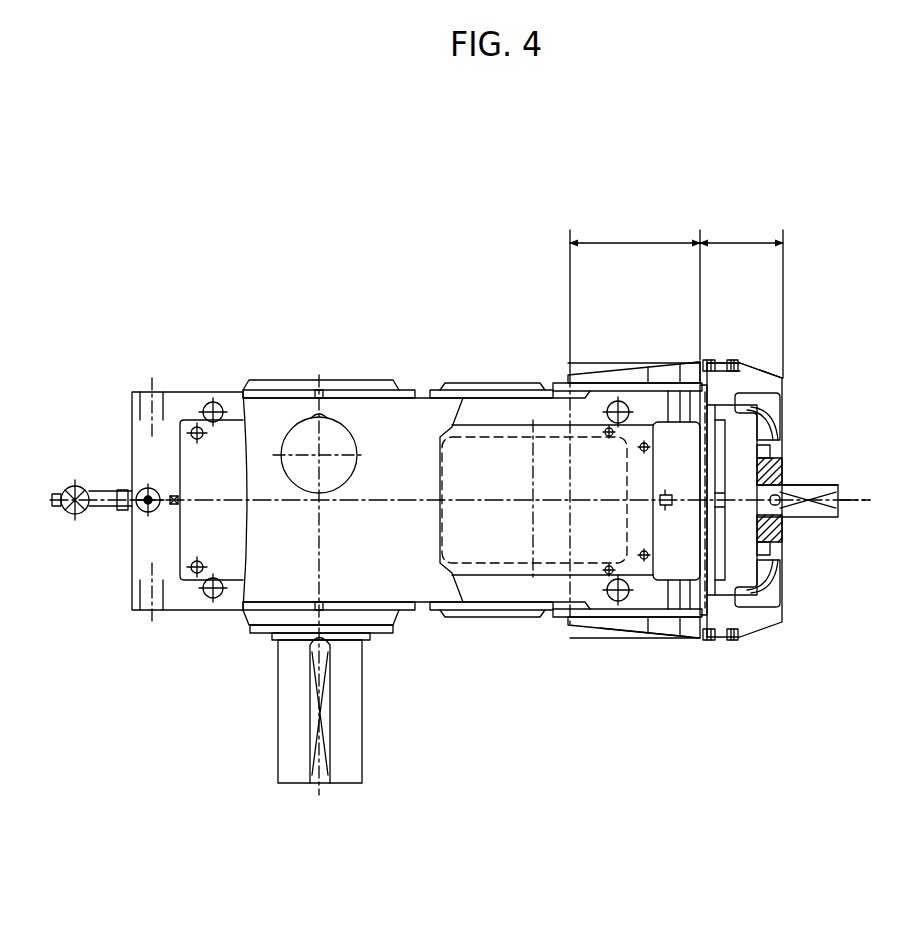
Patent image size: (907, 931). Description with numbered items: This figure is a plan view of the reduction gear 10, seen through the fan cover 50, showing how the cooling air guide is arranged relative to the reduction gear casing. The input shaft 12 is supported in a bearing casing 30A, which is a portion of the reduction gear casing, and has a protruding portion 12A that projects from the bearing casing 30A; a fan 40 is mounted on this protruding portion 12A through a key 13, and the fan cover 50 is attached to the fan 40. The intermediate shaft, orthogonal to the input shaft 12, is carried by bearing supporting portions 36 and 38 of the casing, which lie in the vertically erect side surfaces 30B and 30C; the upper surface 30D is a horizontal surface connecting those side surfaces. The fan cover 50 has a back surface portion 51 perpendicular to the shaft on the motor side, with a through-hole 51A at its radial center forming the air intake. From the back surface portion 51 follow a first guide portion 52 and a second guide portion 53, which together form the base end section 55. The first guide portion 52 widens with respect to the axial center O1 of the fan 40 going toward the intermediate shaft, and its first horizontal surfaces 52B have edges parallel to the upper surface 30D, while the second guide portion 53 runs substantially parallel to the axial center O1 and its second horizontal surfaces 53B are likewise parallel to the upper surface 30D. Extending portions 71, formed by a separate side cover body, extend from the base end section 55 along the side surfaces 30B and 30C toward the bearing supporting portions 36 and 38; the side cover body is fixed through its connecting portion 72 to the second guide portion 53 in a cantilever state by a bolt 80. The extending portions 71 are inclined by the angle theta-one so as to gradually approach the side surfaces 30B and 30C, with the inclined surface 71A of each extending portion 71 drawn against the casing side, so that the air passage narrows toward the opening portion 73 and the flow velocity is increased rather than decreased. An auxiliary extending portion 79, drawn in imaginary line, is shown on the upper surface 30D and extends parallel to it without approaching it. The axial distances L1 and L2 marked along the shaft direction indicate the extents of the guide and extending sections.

The reduction gear 10 is at (444, 354).
The input shaft 12 is at (822, 513).
The protruding portion 12A is at (818, 483).
The key 13 is at (778, 503).
The bearing casing 30A is at (732, 543).
The side surface 30B is at (606, 381).
The side surface 30C is at (602, 623).
The upper surface 30D is at (509, 546).
The bearing supporting portion 36 is at (491, 379).
The bearing supporting portion 38 is at (487, 625).
The fan 40 is at (766, 404).
The fan cover 50 is at (773, 366).
The back surface portion 51 is at (785, 422).
The through-hole 51A is at (786, 453).
The first guide portion 52 is at (759, 365).
The first horizontal surface 52B is at (786, 369).
The second guide portion 53 is at (722, 359).
The second horizontal surface 53B is at (701, 360).
The base end section 55 is at (777, 313).
The extending portion 71 is at (620, 638).
The inclined surface 71A is at (651, 634).
The connecting portion 72 is at (706, 647).
The opening portion 73 is at (579, 381).
The auxiliary extending portion 79 is at (662, 368).
The bolt 80 is at (706, 644).
The axial center O1 is at (848, 502).
The length L1 is at (635, 291).
The length L2 is at (741, 291).